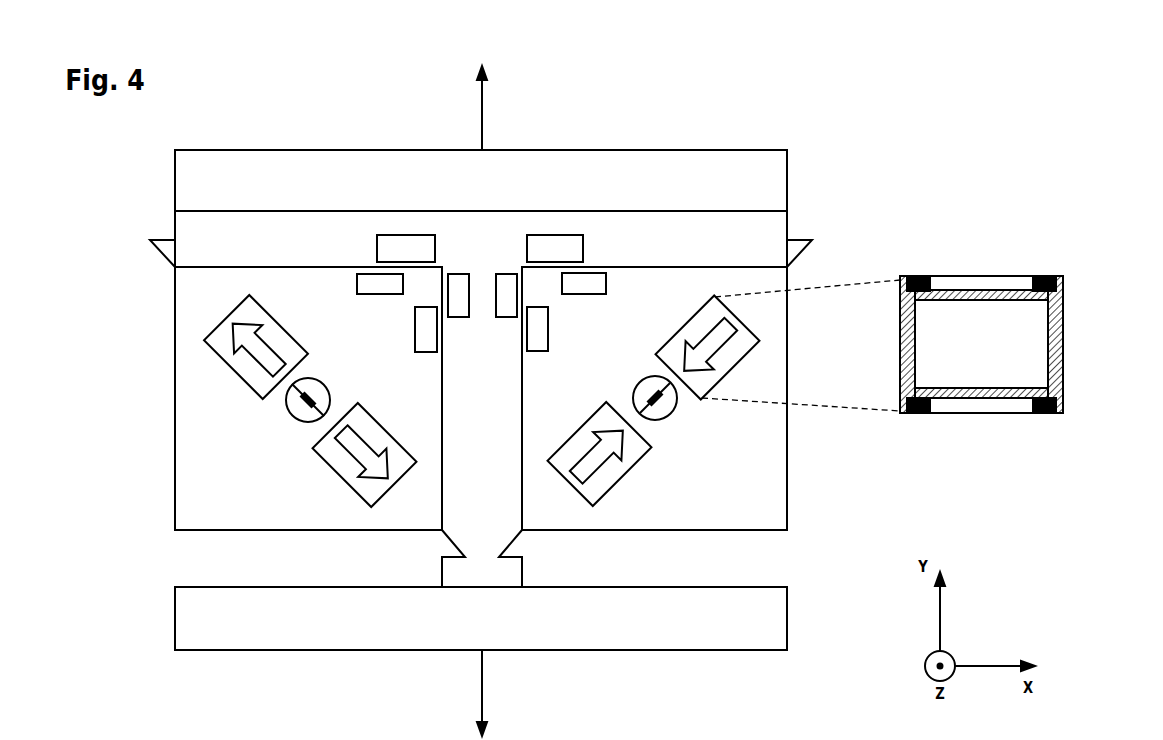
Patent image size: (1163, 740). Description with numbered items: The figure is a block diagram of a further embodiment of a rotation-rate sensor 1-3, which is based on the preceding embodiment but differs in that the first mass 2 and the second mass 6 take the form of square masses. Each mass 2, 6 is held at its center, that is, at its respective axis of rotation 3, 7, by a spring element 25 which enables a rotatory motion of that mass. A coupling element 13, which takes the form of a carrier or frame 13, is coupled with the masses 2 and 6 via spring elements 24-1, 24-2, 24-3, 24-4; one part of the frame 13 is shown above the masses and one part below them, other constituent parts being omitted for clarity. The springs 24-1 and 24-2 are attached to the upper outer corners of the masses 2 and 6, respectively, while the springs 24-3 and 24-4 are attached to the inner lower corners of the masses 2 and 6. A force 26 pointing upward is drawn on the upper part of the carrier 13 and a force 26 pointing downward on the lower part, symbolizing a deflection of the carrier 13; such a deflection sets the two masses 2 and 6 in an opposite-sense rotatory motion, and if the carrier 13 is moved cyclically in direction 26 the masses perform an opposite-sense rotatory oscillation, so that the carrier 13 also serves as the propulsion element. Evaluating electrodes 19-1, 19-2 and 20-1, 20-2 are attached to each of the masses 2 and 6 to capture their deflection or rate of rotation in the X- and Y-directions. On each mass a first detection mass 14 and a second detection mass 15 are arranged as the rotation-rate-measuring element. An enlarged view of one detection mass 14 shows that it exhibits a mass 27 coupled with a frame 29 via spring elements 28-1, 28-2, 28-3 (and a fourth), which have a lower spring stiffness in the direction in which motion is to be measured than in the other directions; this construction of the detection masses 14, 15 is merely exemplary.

The rotation-rate sensor 1-3 is at (838, 152).
The first mass 2 is at (175, 424).
The axis of rotation 3 is at (293, 416).
The second mass 6 is at (787, 478).
The axis of rotation 7 is at (669, 414).
The coupling element 13 is at (175, 182).
The first detection mass 14 is at (667, 308).
The second detection mass 15 is at (323, 460).
The evaluating electrode 19-1 is at (377, 249).
The evaluating electrode 19-2 is at (357, 284).
The evaluating electrode 20-1 is at (456, 273).
The evaluating electrode 20-2 is at (415, 330).
The spring element 24-1 is at (176, 226).
The spring element 24-2 is at (786, 226).
The spring element 24-3 is at (442, 575).
The spring element 24-4 is at (522, 575).
The spring element 25 is at (482, 413).
The force 26 is at (483, 105).
The mass 27 is at (900, 346).
The spring element 28-1 is at (910, 276).
The spring element 28-2 is at (1047, 276).
The spring element 28-3 is at (912, 414).
The frame 29 is at (1063, 345).